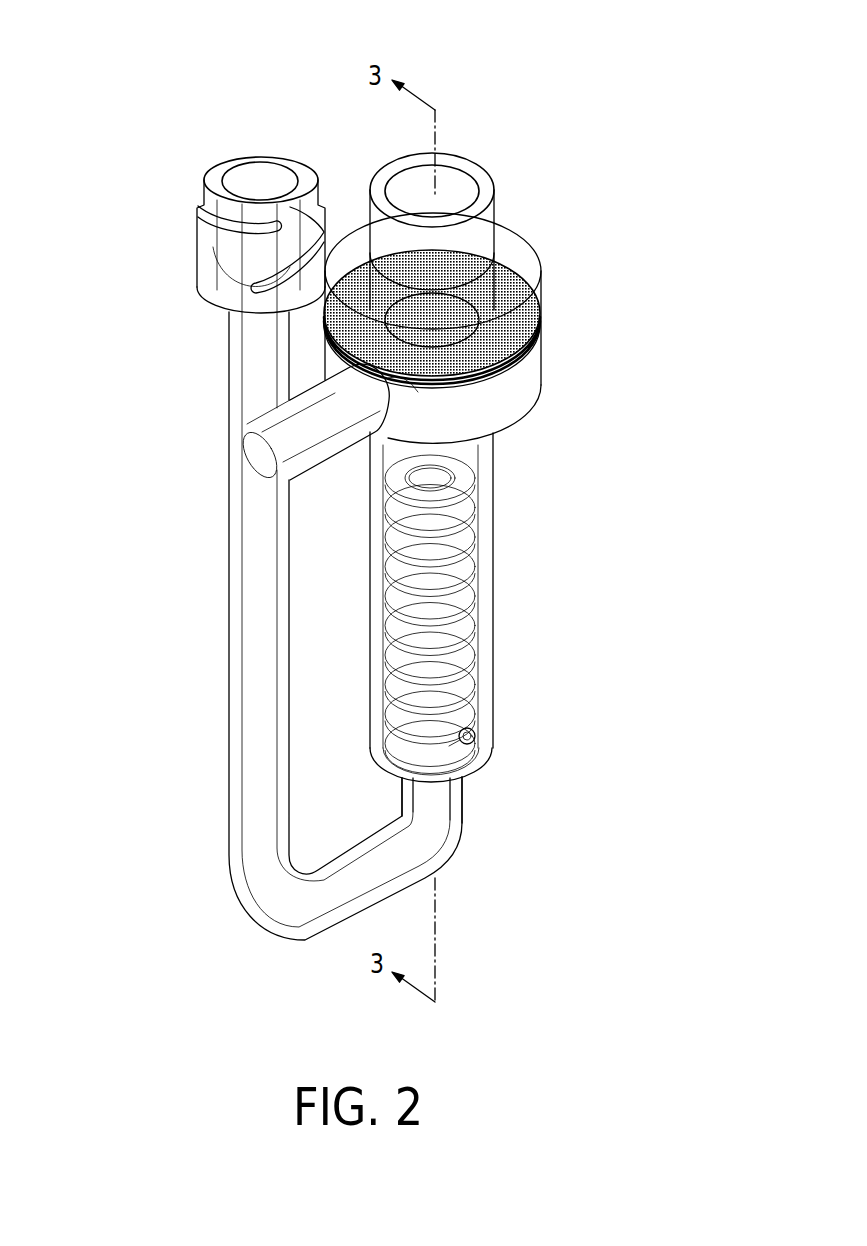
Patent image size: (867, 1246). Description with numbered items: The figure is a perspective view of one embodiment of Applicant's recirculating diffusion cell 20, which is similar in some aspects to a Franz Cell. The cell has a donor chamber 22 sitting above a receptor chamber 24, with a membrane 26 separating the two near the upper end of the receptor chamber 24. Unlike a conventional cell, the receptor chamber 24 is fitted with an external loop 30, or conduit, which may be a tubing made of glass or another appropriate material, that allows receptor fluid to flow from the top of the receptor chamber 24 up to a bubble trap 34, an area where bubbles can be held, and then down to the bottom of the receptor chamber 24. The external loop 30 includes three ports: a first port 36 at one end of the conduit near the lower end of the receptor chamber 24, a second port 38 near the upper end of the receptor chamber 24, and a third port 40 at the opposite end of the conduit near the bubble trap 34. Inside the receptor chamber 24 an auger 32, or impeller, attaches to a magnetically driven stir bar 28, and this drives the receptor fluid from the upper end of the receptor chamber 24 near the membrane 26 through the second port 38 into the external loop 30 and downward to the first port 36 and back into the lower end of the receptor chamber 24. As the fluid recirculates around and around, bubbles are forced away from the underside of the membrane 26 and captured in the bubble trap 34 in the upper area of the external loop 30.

The recirculating diffusion cell 20 is at (604, 461).
The donor chamber 22 is at (488, 233).
The receptor chamber 24 is at (487, 607).
The membrane 26 is at (530, 347).
The stir bar 28 is at (465, 737).
The external loop 30 is at (233, 653).
The auger 32 is at (462, 490).
The bubble trap 34 is at (203, 290).
The first port 36 is at (433, 797).
The second port 38 is at (260, 455).
The third port 40 is at (257, 177).